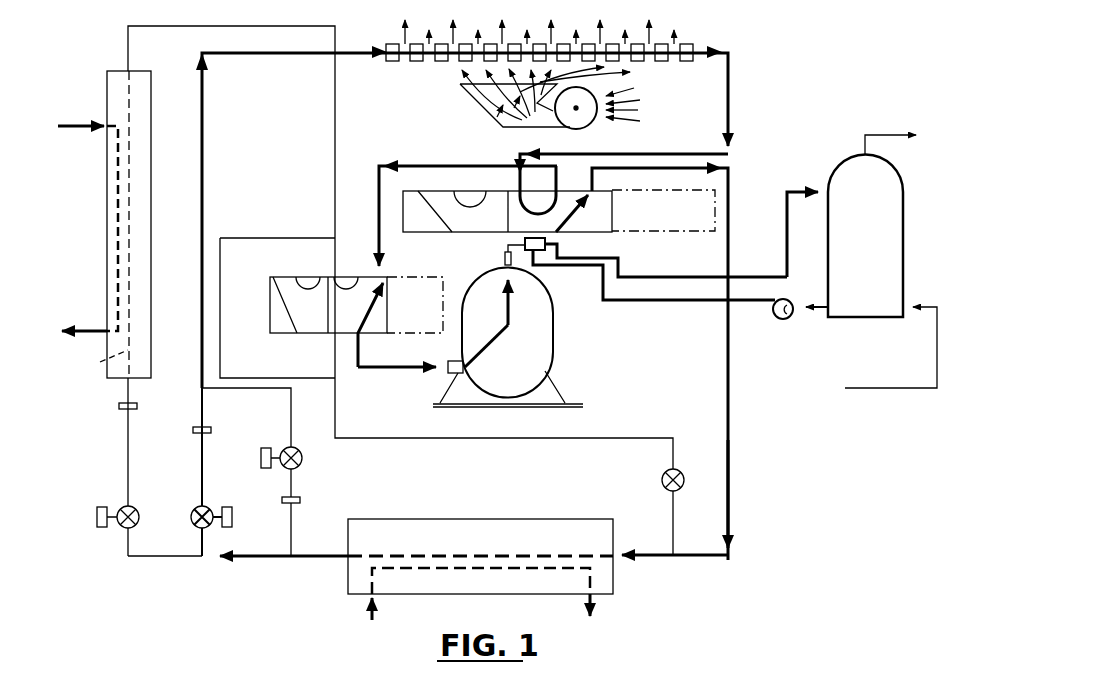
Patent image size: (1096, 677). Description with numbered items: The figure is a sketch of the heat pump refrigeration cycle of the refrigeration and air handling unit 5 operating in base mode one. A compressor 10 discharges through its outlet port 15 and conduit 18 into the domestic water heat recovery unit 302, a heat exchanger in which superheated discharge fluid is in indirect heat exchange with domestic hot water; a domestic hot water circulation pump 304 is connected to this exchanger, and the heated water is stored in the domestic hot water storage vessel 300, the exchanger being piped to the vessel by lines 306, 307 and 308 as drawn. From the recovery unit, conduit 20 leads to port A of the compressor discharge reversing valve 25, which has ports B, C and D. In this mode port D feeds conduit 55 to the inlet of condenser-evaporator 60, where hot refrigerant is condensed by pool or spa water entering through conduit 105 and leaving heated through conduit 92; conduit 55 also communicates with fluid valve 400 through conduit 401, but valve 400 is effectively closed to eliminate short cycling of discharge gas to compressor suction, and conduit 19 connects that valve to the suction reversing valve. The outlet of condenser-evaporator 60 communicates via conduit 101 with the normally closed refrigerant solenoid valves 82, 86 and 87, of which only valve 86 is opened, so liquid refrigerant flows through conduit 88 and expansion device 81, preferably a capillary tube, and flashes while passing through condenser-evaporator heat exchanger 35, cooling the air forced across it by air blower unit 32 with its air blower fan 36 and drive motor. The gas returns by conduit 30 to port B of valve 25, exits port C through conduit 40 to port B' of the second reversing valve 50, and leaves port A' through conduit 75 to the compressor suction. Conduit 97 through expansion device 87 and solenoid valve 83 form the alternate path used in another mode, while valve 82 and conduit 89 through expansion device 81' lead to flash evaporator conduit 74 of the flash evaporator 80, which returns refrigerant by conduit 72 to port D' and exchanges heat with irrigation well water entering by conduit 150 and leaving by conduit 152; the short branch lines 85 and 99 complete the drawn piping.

The refrigeration and air handling unit 5 is at (789, 126).
The compressor 10 is at (540, 319).
The outlet port 15 is at (504, 262).
The conduit 18 is at (507, 245).
The conduit 19 is at (301, 237).
The conduit 20 is at (666, 361).
The compressor discharge reversing valve 25 is at (700, 193).
The conduit 30 is at (733, 78).
The air blower unit 32 is at (463, 103).
The condenser-evaporator heat exchanger 35 is at (696, 30).
The air blower fan 36 is at (581, 125).
The conduit 40 is at (442, 164).
The second reversing valve 50 is at (437, 286).
The conduit 55 is at (731, 446).
The condenser-evaporator 60 is at (554, 521).
The conduit 72 is at (270, 26).
The flash evaporator conduit 74 is at (101, 363).
The conduit 75 is at (428, 363).
The flash evaporator 80 is at (110, 90).
The refrigerant fluid expansion device 81 is at (219, 423).
The expansion device 81' is at (110, 403).
The first refrigerant solenoid valve 82 is at (140, 500).
The third refrigerant solenoid valve 83 is at (295, 458).
The line 85 is at (205, 463).
The second refrigerant solenoid valve 86 is at (195, 524).
The third refrigerant solenoid valve / expansion device 87 is at (304, 499).
The conduit 88 is at (203, 171).
The conduit 89 is at (127, 462).
The conduit 92 is at (594, 606).
The conduit 97 is at (289, 532).
The branch line 99 is at (250, 392).
The conduit 101 is at (305, 556).
The conduit 105 is at (378, 612).
The conduit 150 is at (86, 123).
The conduit 152 is at (90, 325).
The domestic hot water storage vessel 300 is at (882, 251).
The domestic water heat recovery unit 302 is at (548, 249).
The domestic hot water circulation pump 304 is at (785, 319).
The hot line to tank 306 is at (816, 191).
The line to pump 307 is at (758, 290).
The line from tank to pump 308 is at (820, 312).
The fluid valve 400 is at (651, 481).
The conduit 401 is at (674, 514).